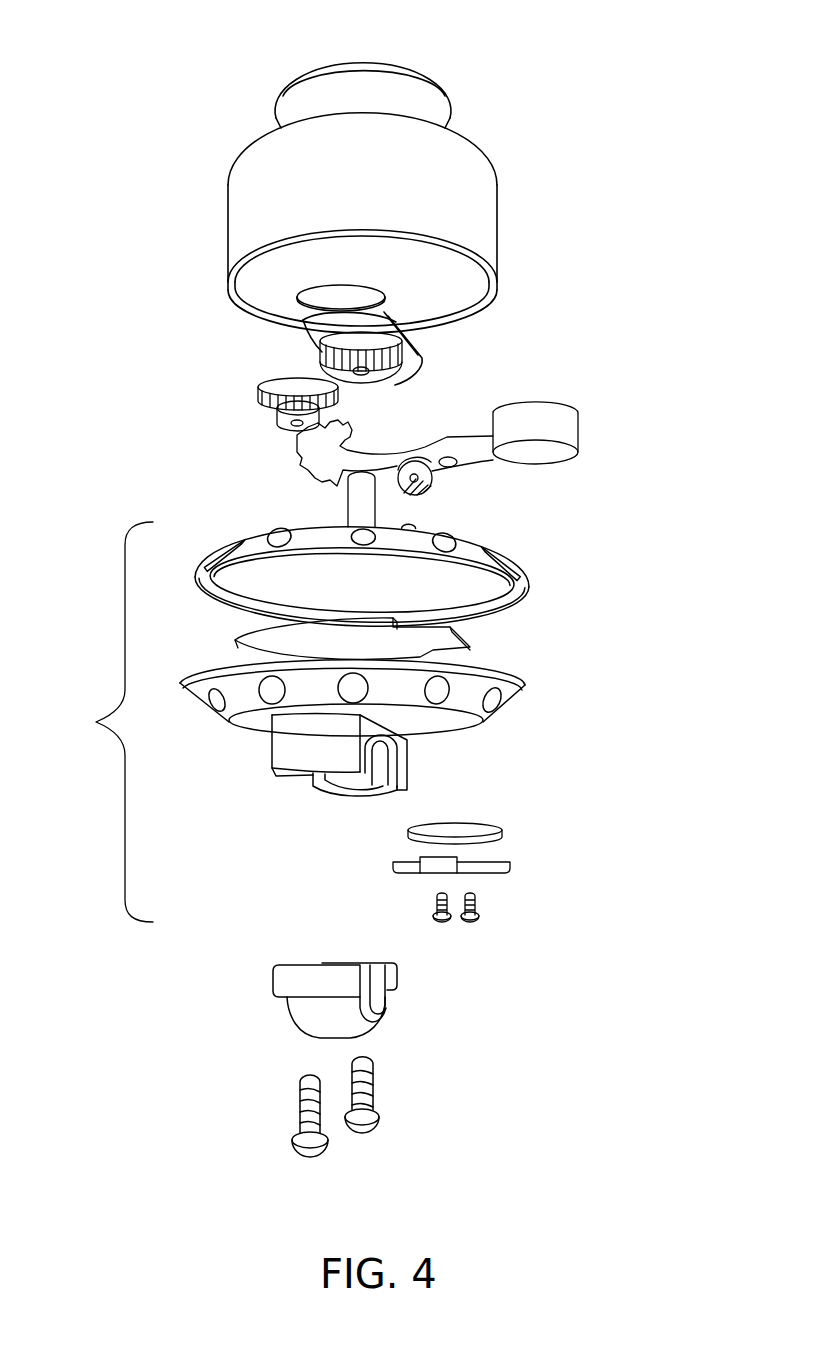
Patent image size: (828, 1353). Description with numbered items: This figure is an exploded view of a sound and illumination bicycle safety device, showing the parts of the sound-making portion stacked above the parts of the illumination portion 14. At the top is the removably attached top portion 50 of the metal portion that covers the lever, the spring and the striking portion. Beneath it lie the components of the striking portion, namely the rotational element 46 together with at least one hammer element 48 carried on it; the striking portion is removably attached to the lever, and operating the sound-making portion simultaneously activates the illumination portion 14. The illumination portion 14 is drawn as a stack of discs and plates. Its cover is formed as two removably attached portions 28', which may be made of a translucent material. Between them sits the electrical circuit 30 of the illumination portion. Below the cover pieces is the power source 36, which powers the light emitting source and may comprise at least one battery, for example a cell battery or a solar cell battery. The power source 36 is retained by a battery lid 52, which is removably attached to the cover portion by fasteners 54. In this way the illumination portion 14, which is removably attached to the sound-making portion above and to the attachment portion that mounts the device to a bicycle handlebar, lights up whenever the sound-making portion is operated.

The illumination portion 14 is at (109, 722).
The two removably attached portions 28' is at (437, 553).
The electrical circuit 30 is at (478, 642).
The power source 36 is at (510, 833).
The rotational element 46 is at (313, 355).
The hammer element 48 is at (306, 313).
The top portion 50 is at (280, 81).
The battery lid 52 is at (522, 870).
The fasteners 54 is at (486, 907).